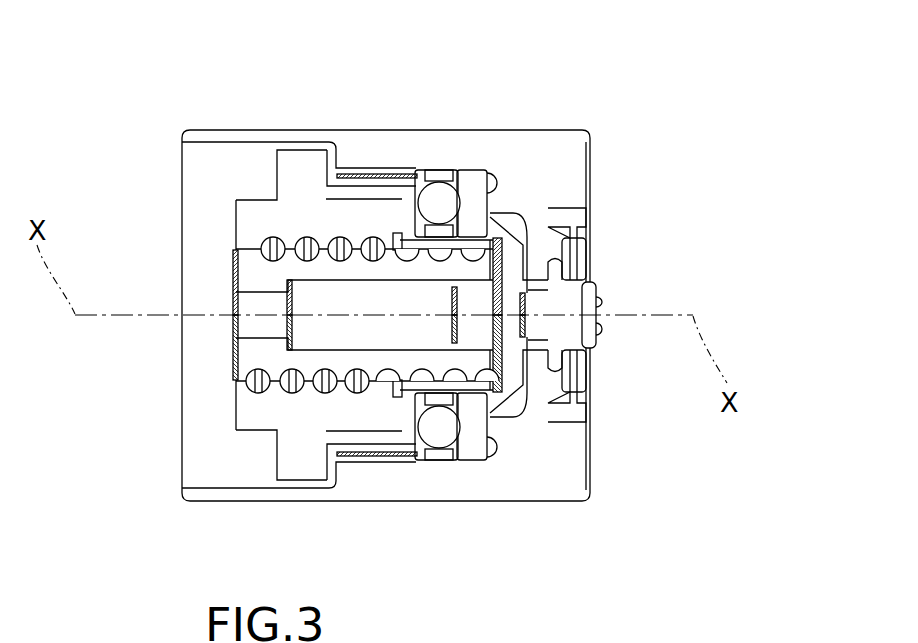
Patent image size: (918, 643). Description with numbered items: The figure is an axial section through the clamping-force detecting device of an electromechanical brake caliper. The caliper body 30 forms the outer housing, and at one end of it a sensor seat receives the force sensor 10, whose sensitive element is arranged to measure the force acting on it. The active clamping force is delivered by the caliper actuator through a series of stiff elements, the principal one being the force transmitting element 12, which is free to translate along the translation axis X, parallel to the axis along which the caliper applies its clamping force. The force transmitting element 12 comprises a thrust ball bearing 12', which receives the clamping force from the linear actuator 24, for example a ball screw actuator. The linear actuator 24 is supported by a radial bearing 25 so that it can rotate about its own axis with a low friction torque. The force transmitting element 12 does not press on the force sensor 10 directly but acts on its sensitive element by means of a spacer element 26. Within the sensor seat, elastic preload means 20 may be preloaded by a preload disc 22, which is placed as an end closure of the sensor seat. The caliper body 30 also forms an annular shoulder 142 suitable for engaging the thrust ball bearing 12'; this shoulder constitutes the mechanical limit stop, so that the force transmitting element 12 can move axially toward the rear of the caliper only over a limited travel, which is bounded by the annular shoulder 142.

The force sensor 10 is at (595, 296).
The force transmitting element 12 is at (446, 233).
The thrust ball bearing 12' is at (509, 237).
The elastic preload means 20 is at (593, 372).
The preload disc 22 is at (593, 222).
The linear actuator 24 is at (290, 168).
The radial bearing 25 is at (385, 172).
The spacer element 26 is at (498, 393).
The caliper body 30 is at (540, 128).
The annular shoulder 142 is at (490, 427).